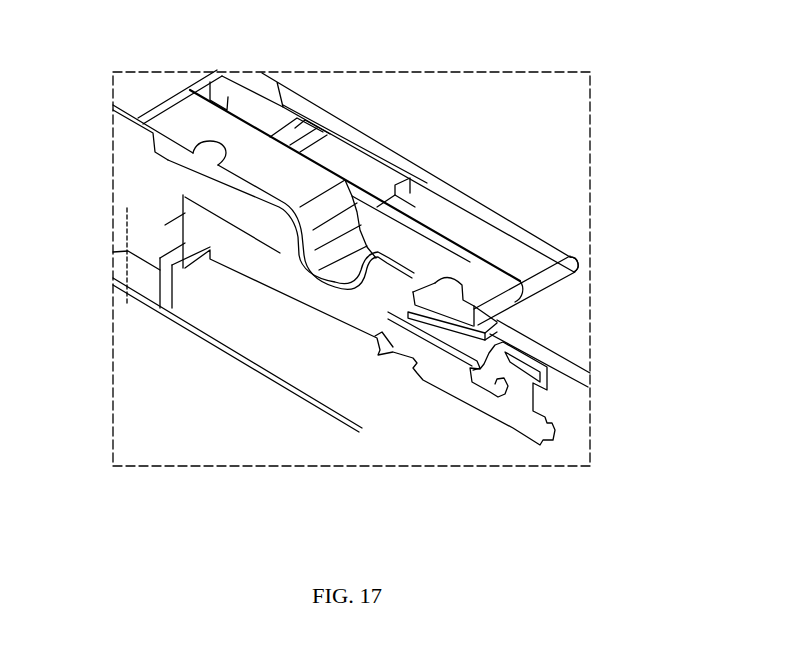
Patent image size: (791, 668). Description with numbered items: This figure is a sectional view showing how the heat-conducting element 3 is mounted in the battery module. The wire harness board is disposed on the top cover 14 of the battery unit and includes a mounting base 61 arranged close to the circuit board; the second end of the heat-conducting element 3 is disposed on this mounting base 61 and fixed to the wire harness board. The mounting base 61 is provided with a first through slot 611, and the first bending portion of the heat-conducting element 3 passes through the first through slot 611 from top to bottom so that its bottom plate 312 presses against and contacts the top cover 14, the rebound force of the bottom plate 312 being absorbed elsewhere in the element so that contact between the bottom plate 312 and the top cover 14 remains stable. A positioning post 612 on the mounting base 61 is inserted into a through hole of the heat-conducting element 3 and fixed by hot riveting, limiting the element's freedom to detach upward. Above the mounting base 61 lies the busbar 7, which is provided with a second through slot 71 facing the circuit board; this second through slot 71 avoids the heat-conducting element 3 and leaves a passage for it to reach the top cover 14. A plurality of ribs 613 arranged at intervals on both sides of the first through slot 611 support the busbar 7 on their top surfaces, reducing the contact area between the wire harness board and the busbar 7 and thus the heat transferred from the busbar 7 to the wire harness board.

The busbar 7 is at (558, 197).
The second through slot 71 is at (558, 258).
The mounting base 61 is at (450, 223).
The first through slot 611 is at (377, 207).
The rib 613 is at (295, 128).
The positioning post 612 is at (193, 153).
The heat-conducting element 3 is at (487, 285).
The bottom plate 312 is at (327, 280).
The top cover 14 is at (387, 300).